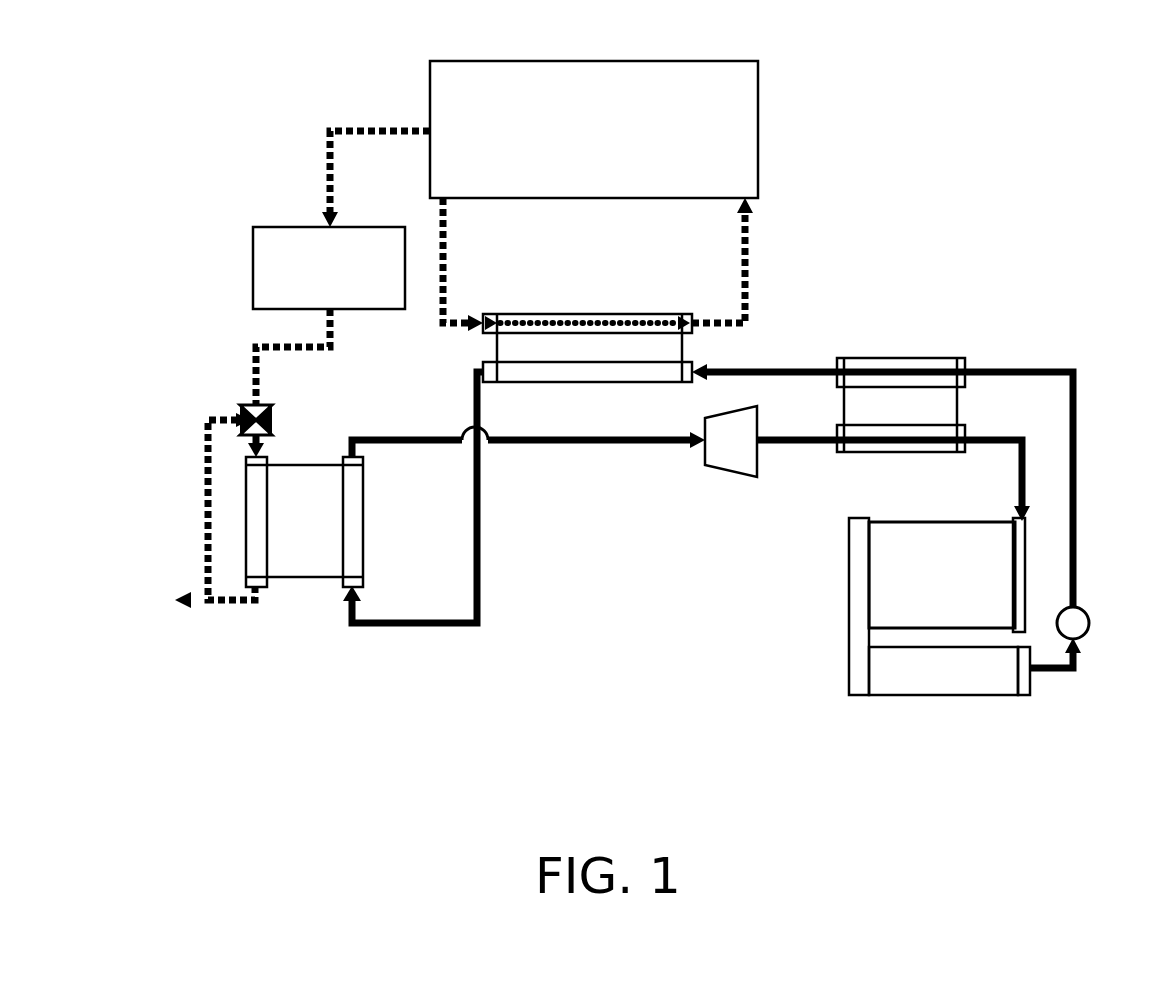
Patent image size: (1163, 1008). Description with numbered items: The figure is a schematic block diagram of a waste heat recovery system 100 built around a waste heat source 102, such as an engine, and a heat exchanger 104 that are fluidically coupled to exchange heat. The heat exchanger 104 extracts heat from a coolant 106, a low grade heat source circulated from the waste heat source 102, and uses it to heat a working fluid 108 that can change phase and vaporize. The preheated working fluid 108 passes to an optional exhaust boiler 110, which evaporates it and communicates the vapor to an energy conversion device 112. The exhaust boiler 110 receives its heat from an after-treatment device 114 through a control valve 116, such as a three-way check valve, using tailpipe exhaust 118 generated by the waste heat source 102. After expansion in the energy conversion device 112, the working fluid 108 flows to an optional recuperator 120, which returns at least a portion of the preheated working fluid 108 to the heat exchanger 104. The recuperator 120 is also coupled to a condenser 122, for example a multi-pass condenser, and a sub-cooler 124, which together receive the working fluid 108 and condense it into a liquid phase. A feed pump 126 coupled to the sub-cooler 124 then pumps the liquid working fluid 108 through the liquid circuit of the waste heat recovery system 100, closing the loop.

The waste heat recovery system 100 is at (1042, 152).
The waste heat source 102 is at (636, 60).
The heat exchanger 104 is at (556, 314).
The coolant 106 is at (443, 268).
The working fluid 108 is at (474, 397).
The exhaust boiler 110 is at (303, 463).
The energy conversion device 112 is at (730, 467).
The after-treatment device 114 is at (253, 283).
The control valve 116 is at (240, 408).
The tailpipe exhaust 118 is at (330, 165).
The recuperator 120 is at (875, 358).
The condenser 122 is at (925, 525).
The sub-cooler 124 is at (927, 695).
The feed pump 126 is at (1088, 632).